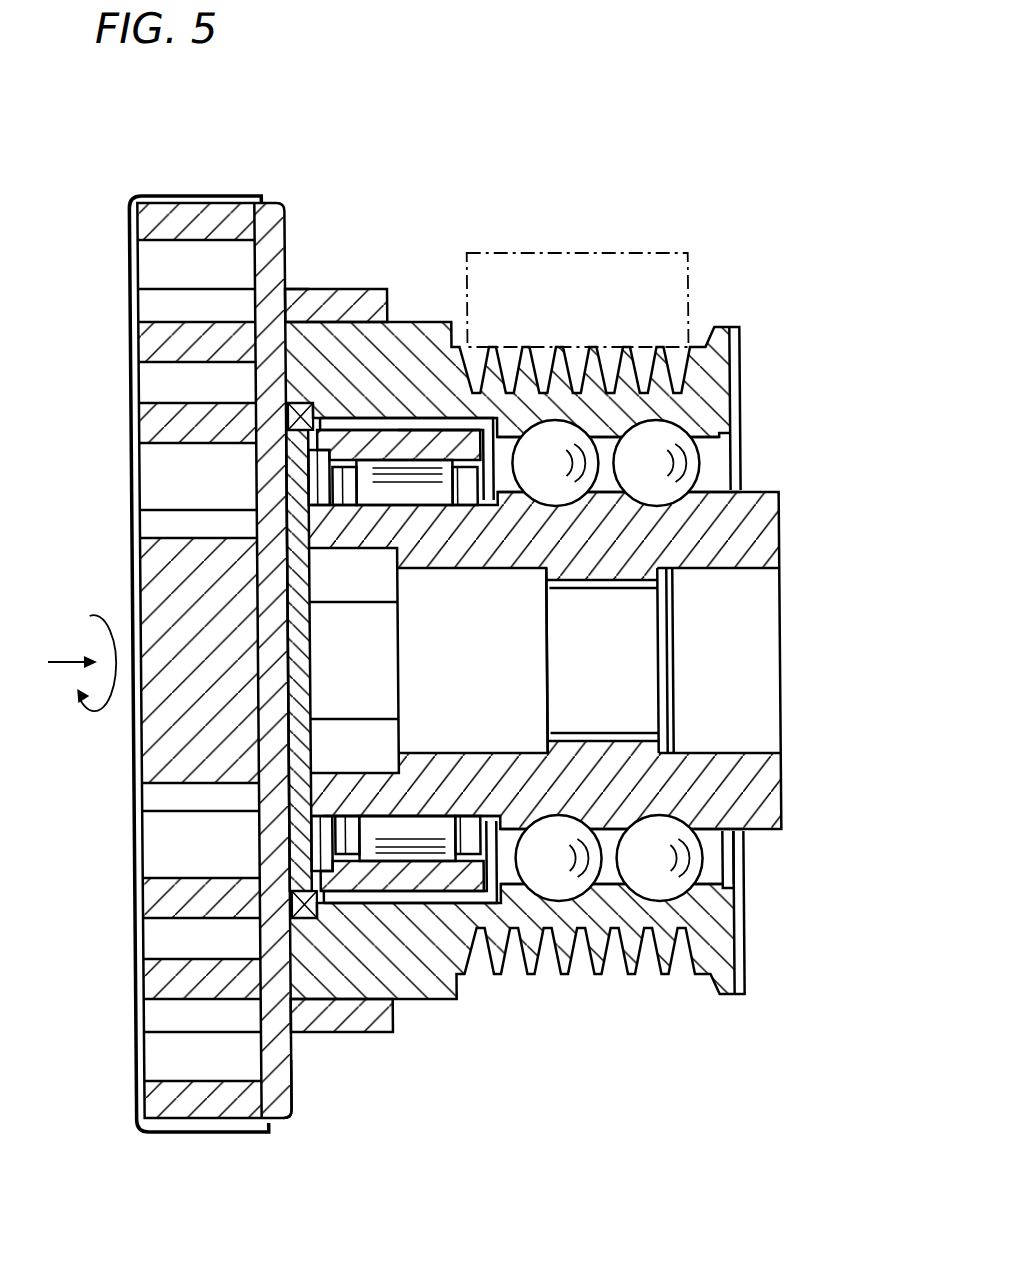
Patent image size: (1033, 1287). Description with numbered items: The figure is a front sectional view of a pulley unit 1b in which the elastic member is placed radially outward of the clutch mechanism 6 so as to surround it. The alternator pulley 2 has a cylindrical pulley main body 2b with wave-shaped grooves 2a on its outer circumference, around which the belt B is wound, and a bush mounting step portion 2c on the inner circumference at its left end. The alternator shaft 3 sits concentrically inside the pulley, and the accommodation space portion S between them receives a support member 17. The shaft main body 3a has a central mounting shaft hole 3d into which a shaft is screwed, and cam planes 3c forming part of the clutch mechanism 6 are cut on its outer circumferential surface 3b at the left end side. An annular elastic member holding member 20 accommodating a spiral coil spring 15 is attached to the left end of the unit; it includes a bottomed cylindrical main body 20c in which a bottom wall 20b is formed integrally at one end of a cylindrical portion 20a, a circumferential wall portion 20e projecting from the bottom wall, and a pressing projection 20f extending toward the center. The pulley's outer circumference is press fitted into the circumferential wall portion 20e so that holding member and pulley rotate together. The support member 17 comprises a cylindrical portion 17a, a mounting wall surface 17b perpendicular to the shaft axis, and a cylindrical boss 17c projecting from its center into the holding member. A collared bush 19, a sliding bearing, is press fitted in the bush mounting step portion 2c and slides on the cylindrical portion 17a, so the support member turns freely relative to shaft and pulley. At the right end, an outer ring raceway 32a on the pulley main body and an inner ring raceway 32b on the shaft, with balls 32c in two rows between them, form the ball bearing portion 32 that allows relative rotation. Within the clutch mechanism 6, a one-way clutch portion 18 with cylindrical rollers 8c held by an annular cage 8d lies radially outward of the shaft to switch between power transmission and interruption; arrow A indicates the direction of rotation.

The pulley unit 1b is at (664, 140).
The alternator pulley 2 is at (448, 322).
The wave-shaped grooves 2a is at (580, 352).
The pulley main body 2b is at (552, 362).
The bush mounting step portion 2c is at (369, 412).
The alternator shaft 3 is at (588, 800).
The shaft main body 3a is at (580, 550).
The outer circumferential surface 3b is at (726, 855).
The cam planes 3c is at (408, 893).
The mounting shaft hole 3d is at (607, 727).
The clutch mechanism 6 is at (454, 780).
The one-way clutch portion 18 is at (446, 850).
The cylindrical rollers 8c is at (412, 840).
The annular cage 8d is at (470, 843).
The spiral coil spring 15 is at (189, 423).
The support member 17 is at (299, 480).
The cylindrical portion 17a is at (299, 448).
The mounting wall surface 17b is at (201, 540).
The cylindrical boss 17c is at (164, 523).
The bush 19 is at (400, 418).
The elastic member holding member 20 is at (214, 622).
The cylindrical portion 20a is at (217, 227).
The bottom wall 20b is at (293, 289).
The bottomed cylindrical main body 20c is at (294, 1087).
The circumferential wall portion 20e is at (305, 300).
The pressing projection 20f is at (166, 272).
The ball bearing portion 32 is at (679, 674).
The outer ring raceway 32a is at (692, 436).
The inner ring raceway 32b is at (744, 488).
The balls 32c is at (639, 452).
The rotation direction A is at (70, 663).
The belt B is at (656, 253).
The accommodation space portion S is at (426, 440).